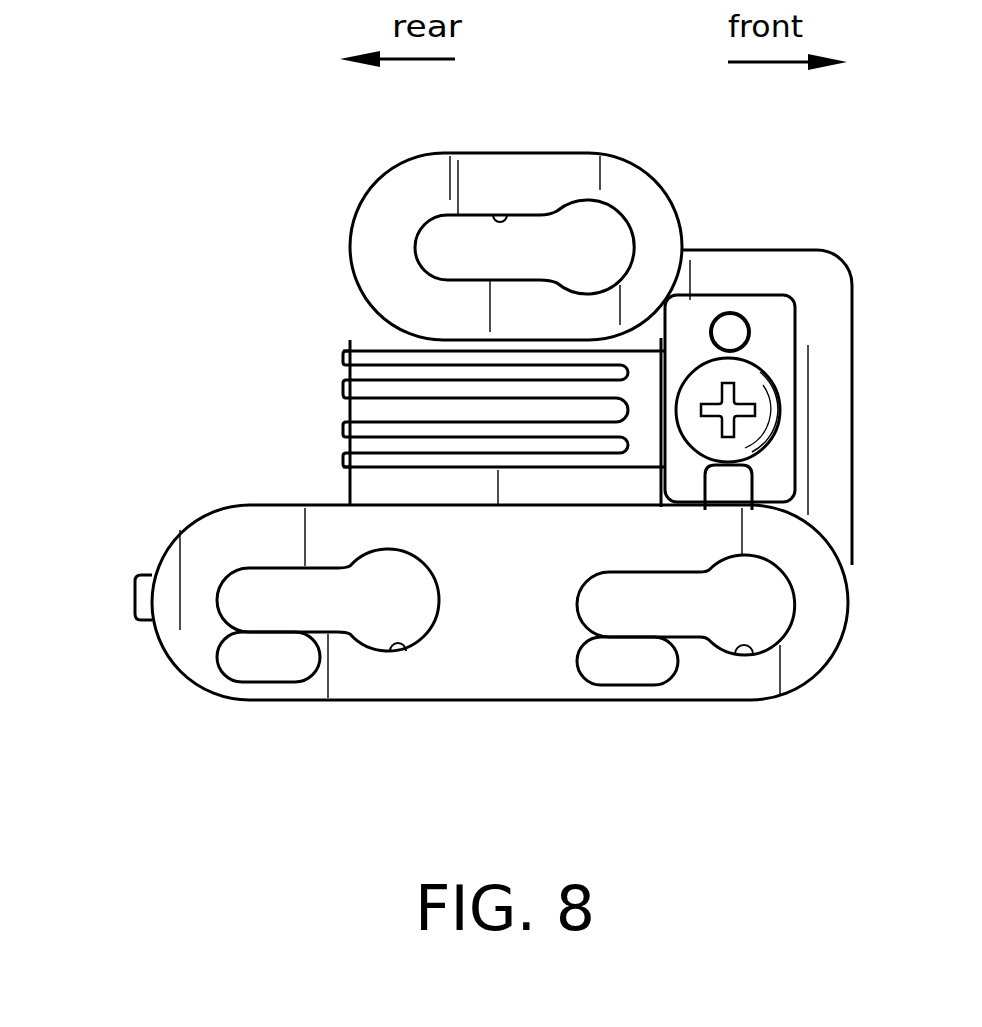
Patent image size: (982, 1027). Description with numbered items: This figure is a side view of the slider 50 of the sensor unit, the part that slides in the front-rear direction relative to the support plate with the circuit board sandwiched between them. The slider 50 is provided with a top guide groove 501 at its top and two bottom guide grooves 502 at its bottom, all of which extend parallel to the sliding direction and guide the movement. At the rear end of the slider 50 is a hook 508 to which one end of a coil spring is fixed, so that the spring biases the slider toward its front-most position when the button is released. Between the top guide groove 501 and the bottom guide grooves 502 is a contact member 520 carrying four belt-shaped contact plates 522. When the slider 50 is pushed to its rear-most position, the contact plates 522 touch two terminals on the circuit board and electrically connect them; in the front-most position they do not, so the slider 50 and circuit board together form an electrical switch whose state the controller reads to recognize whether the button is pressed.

The slider 50 is at (360, 322).
The top guide groove 501 is at (500, 213).
The bottom guide grooves 502 is at (398, 652).
The hook 508 is at (135, 585).
The contact member 520 is at (768, 322).
The contact plates 522 is at (343, 384).